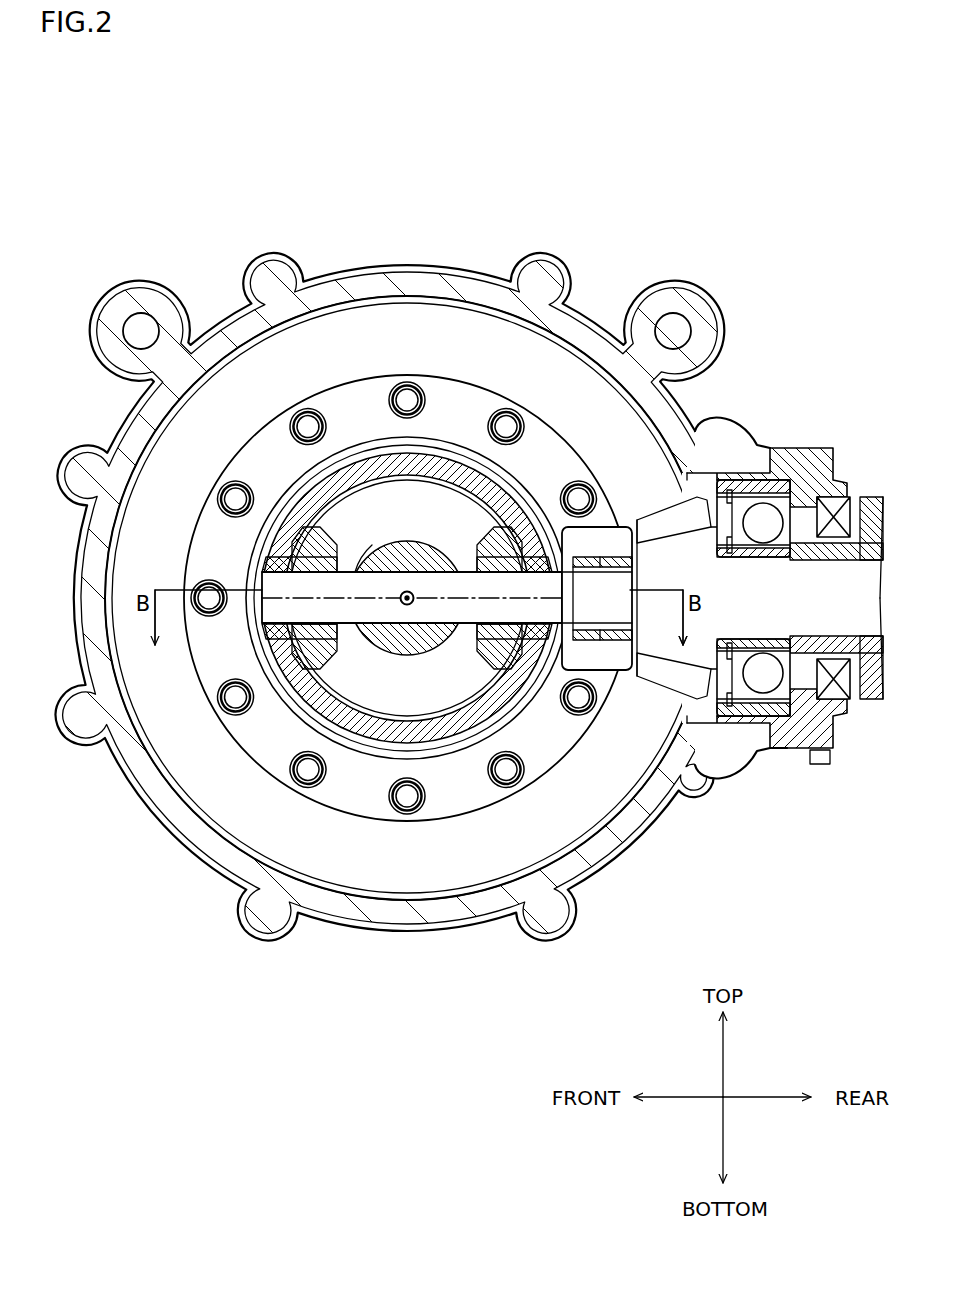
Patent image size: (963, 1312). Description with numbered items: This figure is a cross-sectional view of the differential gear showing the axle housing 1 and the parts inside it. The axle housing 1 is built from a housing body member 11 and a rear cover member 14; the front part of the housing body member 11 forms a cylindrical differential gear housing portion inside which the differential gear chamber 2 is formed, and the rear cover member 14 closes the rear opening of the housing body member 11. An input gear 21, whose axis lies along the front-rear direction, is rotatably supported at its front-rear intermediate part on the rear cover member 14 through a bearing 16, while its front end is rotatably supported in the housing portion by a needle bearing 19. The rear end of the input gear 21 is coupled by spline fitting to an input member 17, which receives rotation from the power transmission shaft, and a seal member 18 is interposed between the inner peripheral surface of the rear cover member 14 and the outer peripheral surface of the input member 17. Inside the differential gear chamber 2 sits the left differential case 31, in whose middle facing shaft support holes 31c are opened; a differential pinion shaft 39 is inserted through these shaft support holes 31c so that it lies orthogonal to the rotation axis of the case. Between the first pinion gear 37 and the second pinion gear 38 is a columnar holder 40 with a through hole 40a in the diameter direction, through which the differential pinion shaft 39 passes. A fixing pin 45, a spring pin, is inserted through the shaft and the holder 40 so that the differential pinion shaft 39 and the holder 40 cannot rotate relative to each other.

The axle housing 1 is at (200, 217).
The differential gear chamber 2 is at (447, 325).
The housing body member 11 is at (388, 284).
The rear cover member 14 is at (822, 462).
The bearing 16 is at (780, 737).
The input member 17 is at (857, 500).
The seal member 18 is at (842, 692).
The needle bearing 19 is at (598, 648).
The input gear 21 is at (752, 590).
The left differential case 31 is at (372, 478).
The shaft support hole 31c is at (264, 580).
The first pinion gear 37 is at (312, 648).
The second pinion gear 38 is at (488, 560).
The differential pinion shaft 39 is at (383, 610).
The holder 40 is at (405, 548).
The through hole 40a is at (378, 582).
The fixing pin 45 is at (412, 608).